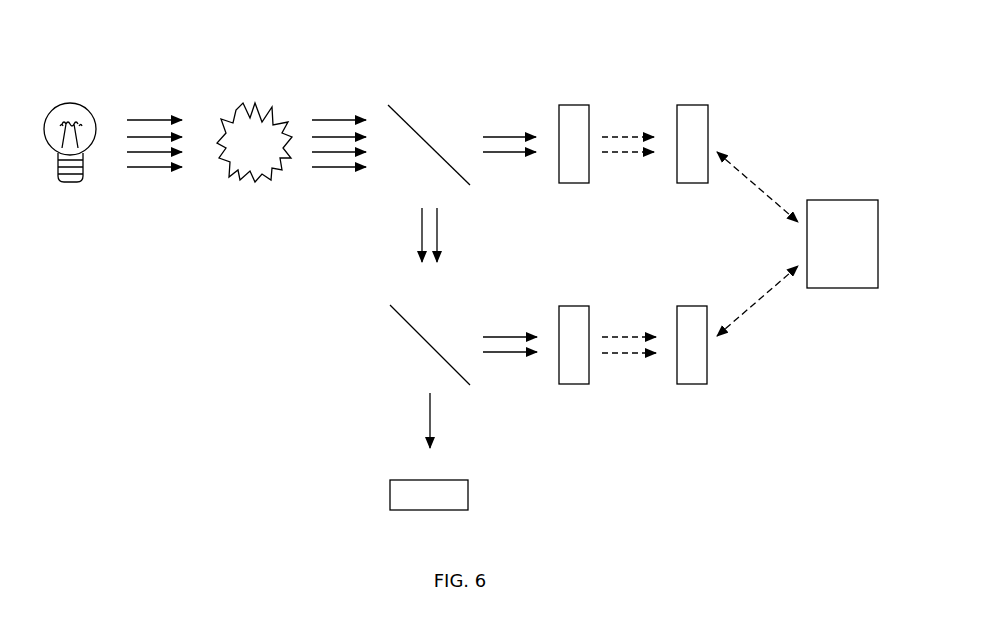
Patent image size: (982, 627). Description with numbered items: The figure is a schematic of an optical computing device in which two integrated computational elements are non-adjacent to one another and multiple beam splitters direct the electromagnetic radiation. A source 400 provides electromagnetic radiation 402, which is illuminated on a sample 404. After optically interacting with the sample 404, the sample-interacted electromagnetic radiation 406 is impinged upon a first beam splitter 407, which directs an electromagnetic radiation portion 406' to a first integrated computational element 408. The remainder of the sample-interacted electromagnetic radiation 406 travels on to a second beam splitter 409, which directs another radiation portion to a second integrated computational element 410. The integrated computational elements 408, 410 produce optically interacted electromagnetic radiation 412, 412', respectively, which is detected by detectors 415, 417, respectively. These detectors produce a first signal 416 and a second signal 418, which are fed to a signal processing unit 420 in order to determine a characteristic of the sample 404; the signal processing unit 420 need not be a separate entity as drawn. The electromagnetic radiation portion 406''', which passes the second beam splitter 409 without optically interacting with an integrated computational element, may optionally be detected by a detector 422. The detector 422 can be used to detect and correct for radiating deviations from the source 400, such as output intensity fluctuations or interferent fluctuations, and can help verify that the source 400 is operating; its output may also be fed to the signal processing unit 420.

The source 400 is at (70, 106).
The electromagnetic radiation 402 is at (148, 120).
The sample 404 is at (238, 112).
The sample-interacted electromagnetic radiation 406 is at (339, 111).
The beam splitter 407 is at (400, 112).
The electromagnetic radiation portion 406' is at (510, 111).
The integrated computational element 408 is at (572, 108).
The optically interacted electromagnetic radiation 412 is at (638, 111).
The detector 415 is at (690, 108).
The first signal 416 is at (748, 180).
The signal processing unit 420 is at (828, 255).
The second signal 418 is at (748, 310).
The beam splitter 409 is at (398, 313).
The integrated computational element 410 is at (572, 308).
The optically interacted electromagnetic radiation 412' is at (641, 313).
The detector 417 is at (690, 308).
The electromagnetic radiation portion 406''' is at (474, 420).
The detector 422 is at (468, 495).